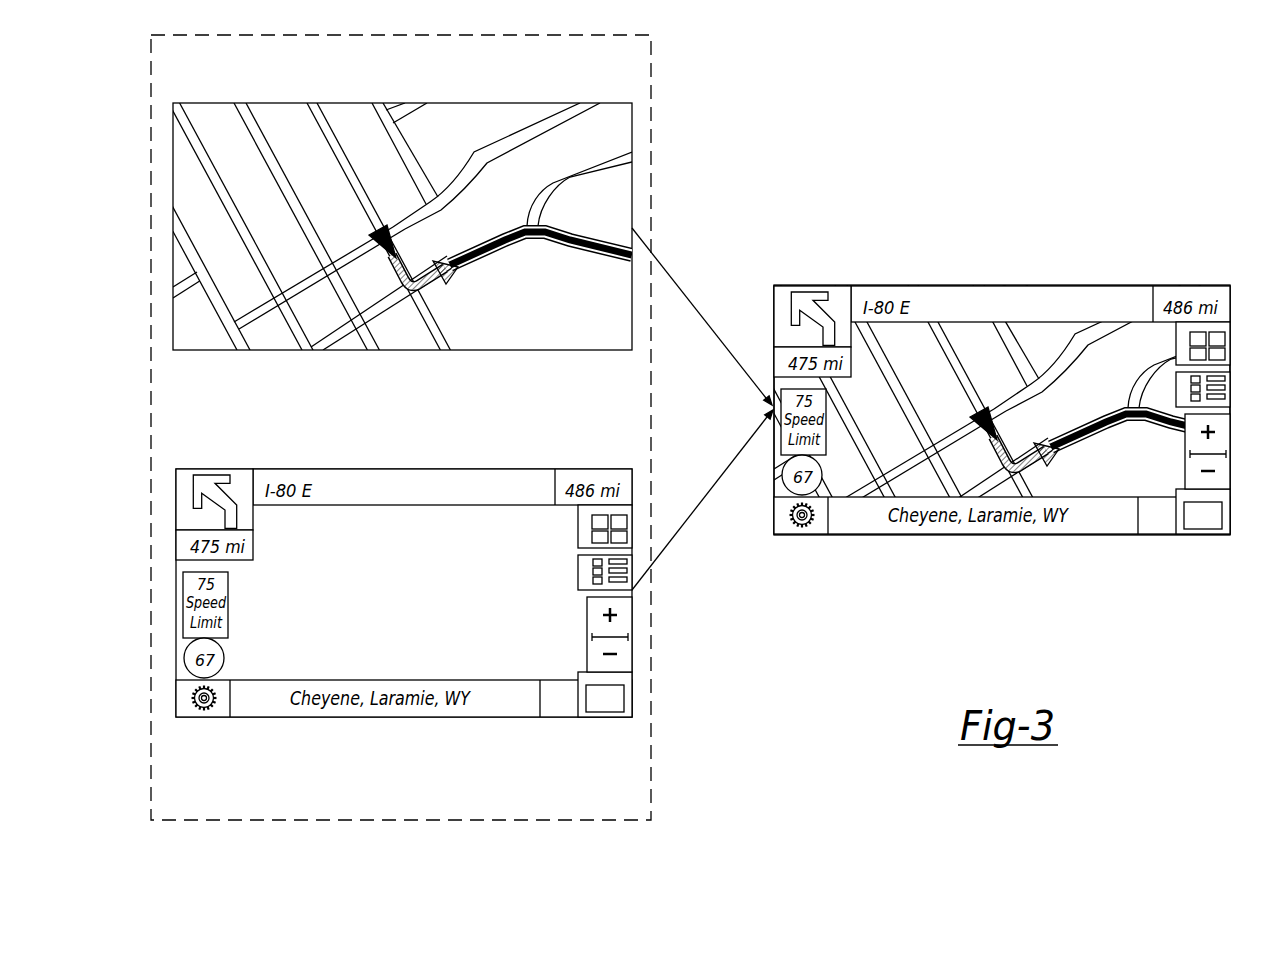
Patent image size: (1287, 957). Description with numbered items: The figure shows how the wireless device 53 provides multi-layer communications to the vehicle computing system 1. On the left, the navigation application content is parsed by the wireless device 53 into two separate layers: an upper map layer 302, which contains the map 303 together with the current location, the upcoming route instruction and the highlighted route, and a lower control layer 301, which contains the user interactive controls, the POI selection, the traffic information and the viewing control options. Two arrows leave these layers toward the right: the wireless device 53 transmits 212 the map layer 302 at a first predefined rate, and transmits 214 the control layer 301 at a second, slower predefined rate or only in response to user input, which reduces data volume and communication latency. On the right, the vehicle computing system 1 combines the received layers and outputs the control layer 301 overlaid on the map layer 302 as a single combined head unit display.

The vehicle computing system 1 is at (1000, 224).
The wireless device 53 is at (144, 125).
The transmit map layer 212 is at (734, 317).
The transmit control layer 214 is at (734, 526).
The control layer 301 is at (404, 600).
The map layer 302 is at (352, 72).
The map 303 is at (361, 205).